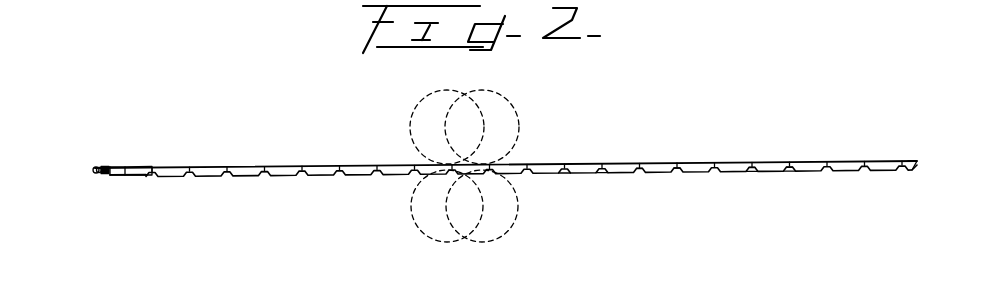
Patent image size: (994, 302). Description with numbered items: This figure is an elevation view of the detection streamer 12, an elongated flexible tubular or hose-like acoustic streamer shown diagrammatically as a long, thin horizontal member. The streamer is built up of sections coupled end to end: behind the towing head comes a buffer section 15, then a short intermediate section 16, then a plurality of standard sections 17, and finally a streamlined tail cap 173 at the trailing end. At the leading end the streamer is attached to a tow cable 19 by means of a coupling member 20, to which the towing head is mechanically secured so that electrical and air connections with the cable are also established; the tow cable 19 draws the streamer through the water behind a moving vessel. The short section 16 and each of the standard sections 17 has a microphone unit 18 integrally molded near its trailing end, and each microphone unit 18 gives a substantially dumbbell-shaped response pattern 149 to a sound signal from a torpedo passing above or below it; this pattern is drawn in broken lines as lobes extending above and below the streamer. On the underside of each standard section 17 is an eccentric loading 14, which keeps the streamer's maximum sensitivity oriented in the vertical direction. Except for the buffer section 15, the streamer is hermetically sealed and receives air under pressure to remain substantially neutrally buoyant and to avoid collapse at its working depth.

The detection streamer 12 is at (349, 162).
The eccentric loading 14 is at (203, 172).
The buffer section 15 is at (118, 167).
The short intermediate section 16 is at (141, 167).
The standard sections 17 is at (583, 163).
The microphone unit 18 is at (297, 164).
The tow cable 19 is at (95, 178).
The coupling member 20 is at (102, 166).
The dumbbell-shaped response pattern 149 is at (481, 239).
The streamlined tail cap 173 is at (912, 162).